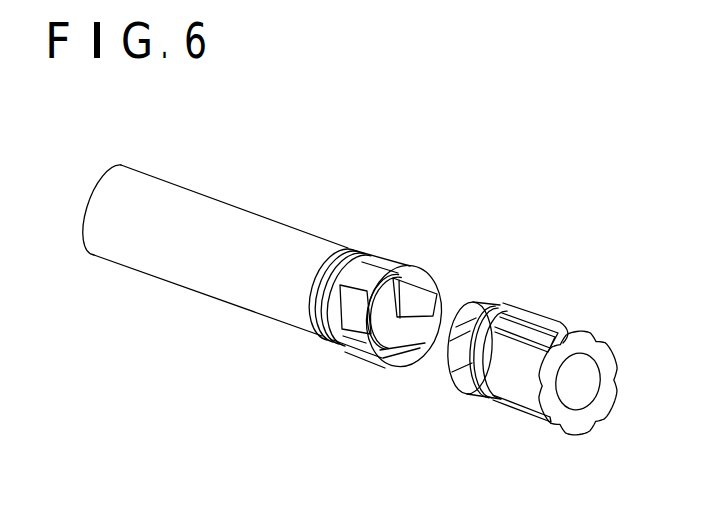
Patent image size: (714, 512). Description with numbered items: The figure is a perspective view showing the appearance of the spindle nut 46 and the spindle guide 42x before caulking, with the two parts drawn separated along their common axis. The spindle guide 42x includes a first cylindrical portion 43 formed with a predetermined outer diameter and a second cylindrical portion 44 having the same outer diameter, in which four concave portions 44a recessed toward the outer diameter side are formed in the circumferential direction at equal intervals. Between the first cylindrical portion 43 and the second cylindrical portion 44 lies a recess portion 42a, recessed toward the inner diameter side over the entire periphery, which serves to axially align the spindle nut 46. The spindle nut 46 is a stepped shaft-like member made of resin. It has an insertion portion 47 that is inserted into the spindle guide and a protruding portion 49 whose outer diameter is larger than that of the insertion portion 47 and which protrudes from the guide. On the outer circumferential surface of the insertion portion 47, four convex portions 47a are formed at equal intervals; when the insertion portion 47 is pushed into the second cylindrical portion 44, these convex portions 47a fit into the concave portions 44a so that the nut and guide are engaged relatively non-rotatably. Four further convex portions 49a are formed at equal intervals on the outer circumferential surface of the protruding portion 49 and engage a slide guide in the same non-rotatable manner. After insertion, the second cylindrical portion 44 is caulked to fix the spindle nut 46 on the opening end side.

The spindle guide 42x is at (327, 223).
The recess portion 42a is at (314, 333).
The first cylindrical portion 43 is at (187, 262).
The second cylindrical portion 44 is at (379, 303).
The concave portions 44a is at (398, 262).
The spindle nut 46 is at (507, 329).
The insertion portion 47 is at (457, 378).
The convex portions 47a is at (483, 297).
The protruding portion 49 is at (568, 416).
The convex portions 49a is at (562, 338).